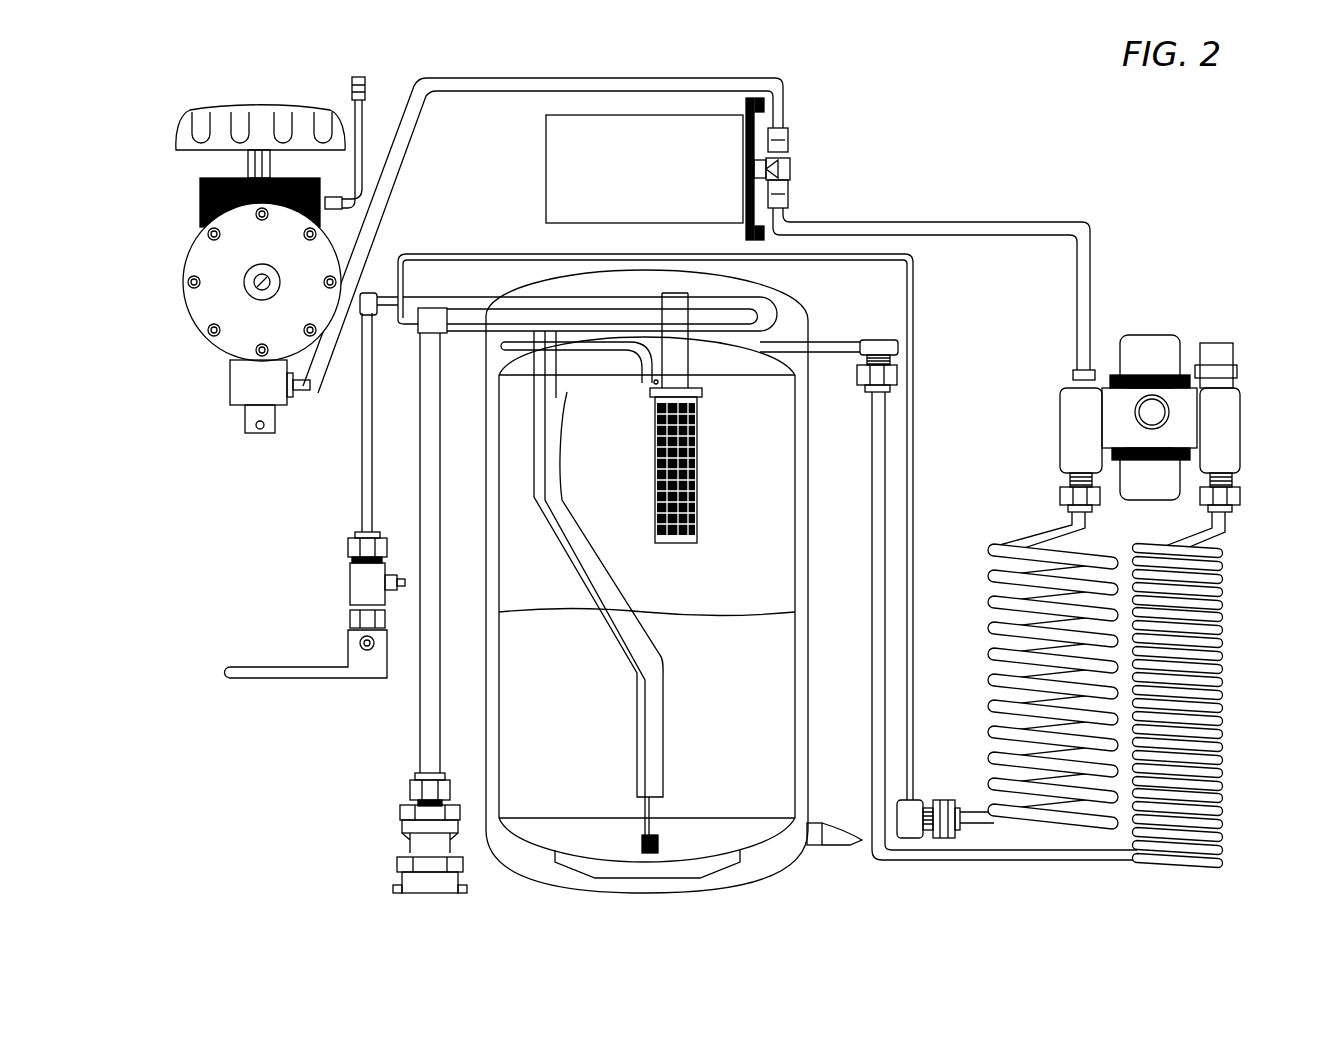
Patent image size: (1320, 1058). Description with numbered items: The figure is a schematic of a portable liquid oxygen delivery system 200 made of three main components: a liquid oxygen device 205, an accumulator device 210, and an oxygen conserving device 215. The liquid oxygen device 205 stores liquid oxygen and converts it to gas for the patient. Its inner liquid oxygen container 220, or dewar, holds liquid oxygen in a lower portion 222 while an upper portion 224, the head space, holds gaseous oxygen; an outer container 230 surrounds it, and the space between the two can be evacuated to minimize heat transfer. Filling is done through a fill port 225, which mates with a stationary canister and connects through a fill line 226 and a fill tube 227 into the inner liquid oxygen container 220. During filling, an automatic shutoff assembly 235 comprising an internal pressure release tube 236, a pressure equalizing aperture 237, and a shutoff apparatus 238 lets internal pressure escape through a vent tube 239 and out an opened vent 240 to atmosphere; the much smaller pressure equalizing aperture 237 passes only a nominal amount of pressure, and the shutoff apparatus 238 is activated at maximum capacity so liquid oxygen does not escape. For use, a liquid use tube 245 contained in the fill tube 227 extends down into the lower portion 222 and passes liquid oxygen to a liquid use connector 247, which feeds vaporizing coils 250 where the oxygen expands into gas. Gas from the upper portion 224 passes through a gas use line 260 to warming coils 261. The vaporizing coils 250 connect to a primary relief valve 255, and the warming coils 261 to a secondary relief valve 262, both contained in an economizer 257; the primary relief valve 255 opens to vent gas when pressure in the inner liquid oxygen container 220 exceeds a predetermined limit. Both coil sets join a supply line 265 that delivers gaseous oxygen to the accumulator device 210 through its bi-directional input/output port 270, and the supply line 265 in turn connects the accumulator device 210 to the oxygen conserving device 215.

The portable liquid oxygen delivery system 200 is at (1195, 111).
The liquid oxygen device 205 is at (918, 292).
The accumulator device 210 is at (655, 169).
The oxygen conserving device 215 is at (188, 313).
The inner liquid oxygen container 220 is at (500, 720).
The lower portion 222 is at (647, 655).
The upper portion 224 is at (612, 448).
The fill port 225 is at (405, 823).
The fill line 226 is at (420, 693).
The fill tube 227 is at (607, 576).
The outer container 230 is at (800, 858).
The automatic shutoff assembly 235 is at (718, 444).
The internal pressure release tube 236 is at (680, 355).
The pressure equalizing aperture 237 is at (654, 383).
The shutoff apparatus 238 is at (700, 490).
The vent tube 239 is at (362, 440).
The vent 240 is at (350, 565).
The liquid use tube 245 is at (645, 745).
The liquid use connector 247 is at (910, 838).
The vaporizing coils 250 is at (1060, 826).
The primary relief valve 255 is at (1152, 412).
The economizer 257 is at (1155, 335).
The gas use line 260 is at (877, 432).
The warming coils 261 is at (1215, 858).
The secondary relief valve 262 is at (1233, 350).
The supply line 265 is at (655, 78).
The bi-directional input/output port 270 is at (790, 162).